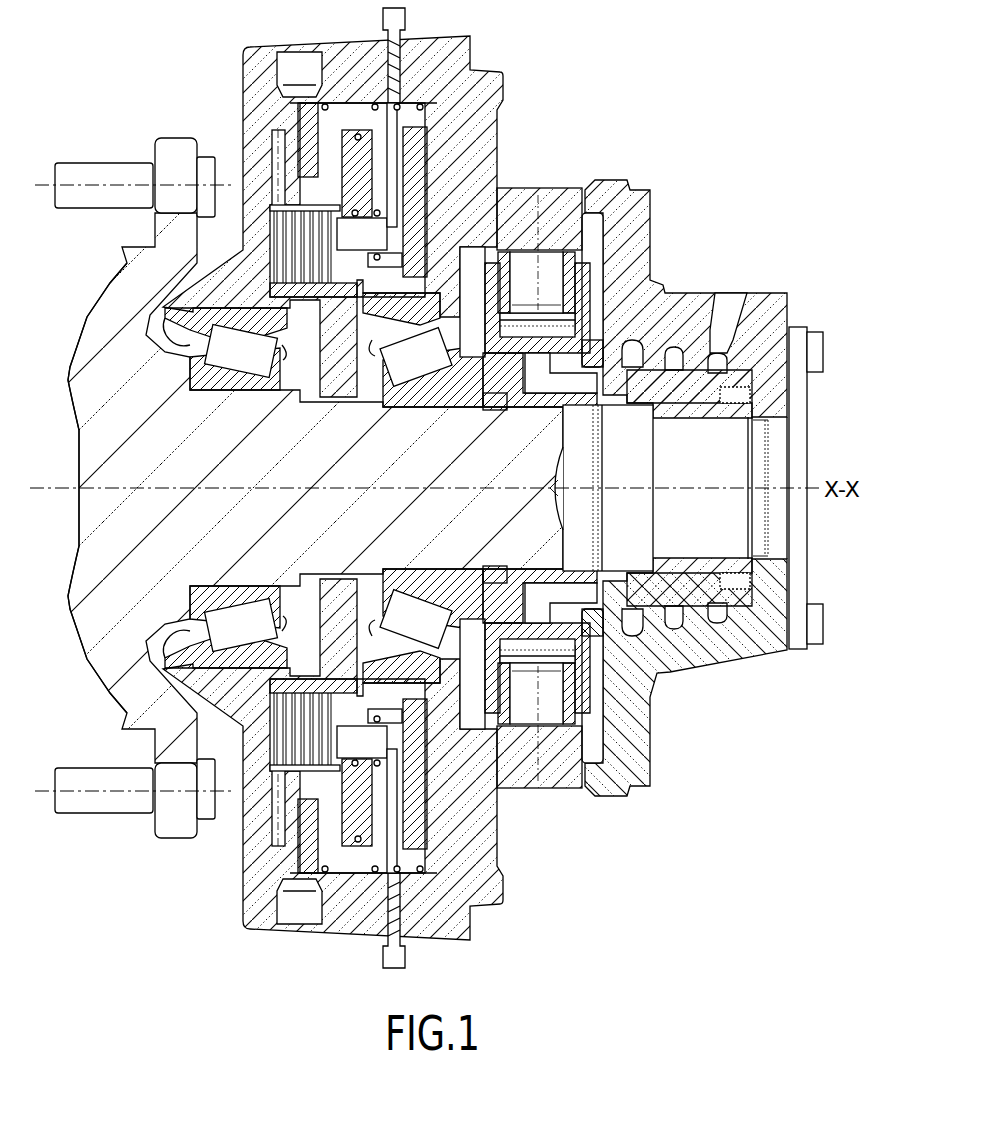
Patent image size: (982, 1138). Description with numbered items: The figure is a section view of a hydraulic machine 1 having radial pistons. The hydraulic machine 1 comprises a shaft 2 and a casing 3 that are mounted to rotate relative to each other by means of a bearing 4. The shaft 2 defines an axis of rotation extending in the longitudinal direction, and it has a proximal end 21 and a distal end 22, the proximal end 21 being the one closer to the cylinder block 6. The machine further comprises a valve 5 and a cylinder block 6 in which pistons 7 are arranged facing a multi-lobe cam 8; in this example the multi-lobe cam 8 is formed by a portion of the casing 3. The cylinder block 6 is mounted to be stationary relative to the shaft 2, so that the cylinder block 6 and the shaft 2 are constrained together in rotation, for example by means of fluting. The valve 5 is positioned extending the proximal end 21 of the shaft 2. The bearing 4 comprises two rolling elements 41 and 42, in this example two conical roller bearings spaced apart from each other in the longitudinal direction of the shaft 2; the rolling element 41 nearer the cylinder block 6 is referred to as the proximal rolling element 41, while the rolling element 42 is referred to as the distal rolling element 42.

The hydraulic machine 1 is at (136, 123).
The shaft 2 is at (302, 535).
The casing 3 is at (243, 143).
The bearing 4 is at (335, 488).
The proximal rolling element 41 is at (435, 488).
The distal rolling element 42 is at (280, 400).
The valve 5 is at (690, 418).
The cylinder block 6 is at (588, 318).
The pistons 7 is at (550, 272).
The multi-lobe cam 8 is at (538, 225).
The proximal end 21 is at (557, 477).
The distal end 22 is at (78, 457).